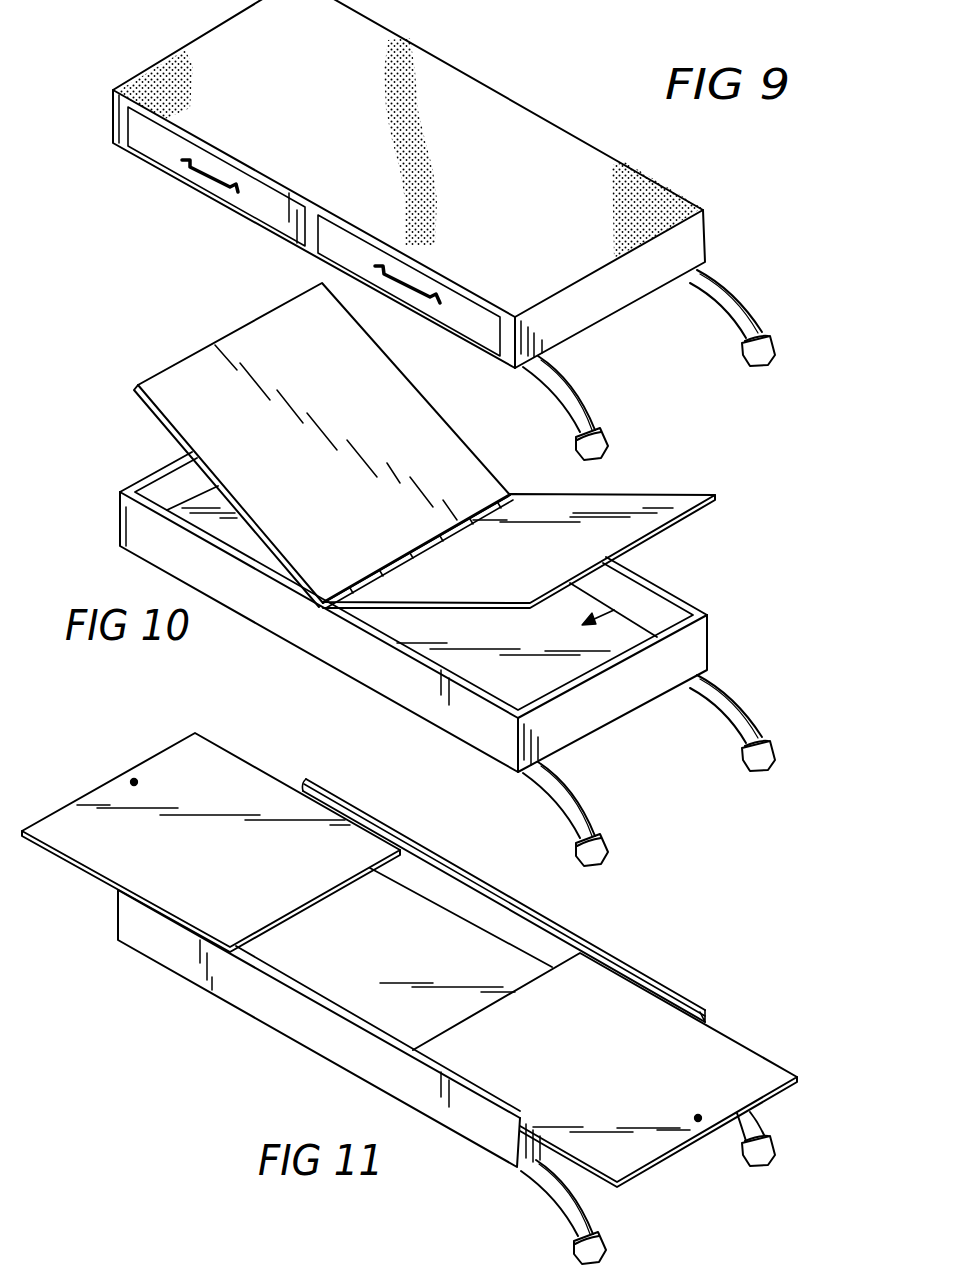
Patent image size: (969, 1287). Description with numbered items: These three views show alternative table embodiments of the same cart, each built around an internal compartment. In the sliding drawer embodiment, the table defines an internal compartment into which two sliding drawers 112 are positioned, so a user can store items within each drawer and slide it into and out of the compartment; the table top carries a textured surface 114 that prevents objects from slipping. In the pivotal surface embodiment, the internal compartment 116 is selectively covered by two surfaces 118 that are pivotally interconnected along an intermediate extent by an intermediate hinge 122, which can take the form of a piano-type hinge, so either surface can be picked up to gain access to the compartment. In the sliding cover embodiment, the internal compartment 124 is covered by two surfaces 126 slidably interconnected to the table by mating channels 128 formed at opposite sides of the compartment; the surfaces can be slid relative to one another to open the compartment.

In FIG. 9, the sliding drawer 112 is at (153, 140).
In FIG. 9, the textured surface 114 is at (417, 147).
In FIG. 10, the internal compartment 116 is at (239, 533).
In FIG. 10, the surface 118 is at (172, 392).
In FIG. 10, the intermediate hinge 122 is at (323, 604).
In FIG. 11, the internal compartment 124 is at (425, 927).
In FIG. 11, the surface 126 is at (107, 855).
In FIG. 11, the mating channel 128 is at (572, 935).